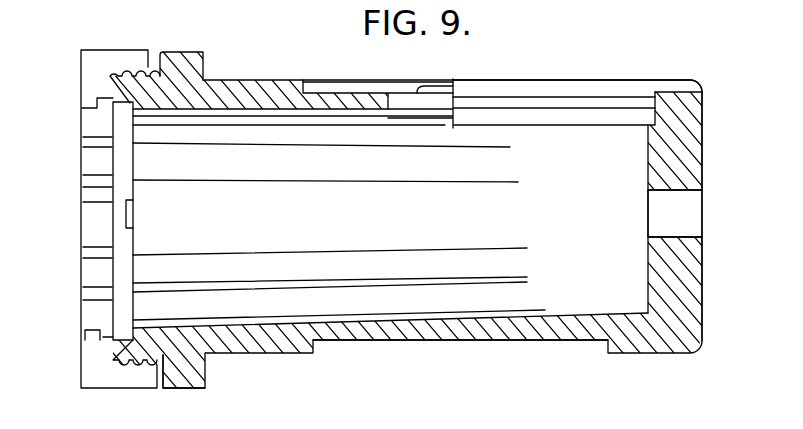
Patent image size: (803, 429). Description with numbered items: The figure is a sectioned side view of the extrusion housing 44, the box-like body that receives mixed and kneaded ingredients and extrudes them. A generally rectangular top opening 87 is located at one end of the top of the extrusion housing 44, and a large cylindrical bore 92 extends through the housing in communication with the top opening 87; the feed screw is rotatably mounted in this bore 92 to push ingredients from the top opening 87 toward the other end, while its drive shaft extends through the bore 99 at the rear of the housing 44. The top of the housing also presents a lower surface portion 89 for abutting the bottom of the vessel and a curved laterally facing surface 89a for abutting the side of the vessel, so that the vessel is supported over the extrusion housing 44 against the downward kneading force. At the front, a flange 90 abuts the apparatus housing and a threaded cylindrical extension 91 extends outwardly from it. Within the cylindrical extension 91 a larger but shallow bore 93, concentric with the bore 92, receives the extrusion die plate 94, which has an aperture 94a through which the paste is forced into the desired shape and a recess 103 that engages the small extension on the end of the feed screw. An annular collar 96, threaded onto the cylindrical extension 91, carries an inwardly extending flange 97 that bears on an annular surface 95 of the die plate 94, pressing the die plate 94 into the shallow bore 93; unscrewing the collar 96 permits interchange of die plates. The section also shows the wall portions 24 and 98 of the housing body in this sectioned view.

The container body 24 is at (553, 100).
The extrusion housing 44 is at (277, 340).
The top opening 87 is at (633, 88).
The lower surface portion 89 is at (436, 86).
The curved laterally facing surface 89a is at (338, 86).
The flange 90 is at (180, 62).
The cylindrical extension 91 is at (128, 70).
The cylindrical bore 92 is at (628, 263).
The shallow bore 93 is at (110, 111).
The extrusion die plate 94 is at (90, 203).
The aperture 94a is at (88, 182).
The annular surface 95 is at (103, 343).
The annular collar 96 is at (124, 378).
The inwardly extending flange 97 is at (88, 103).
The upper wall portion 98 is at (688, 141).
The bore 99 is at (688, 208).
The recess 103 is at (128, 218).